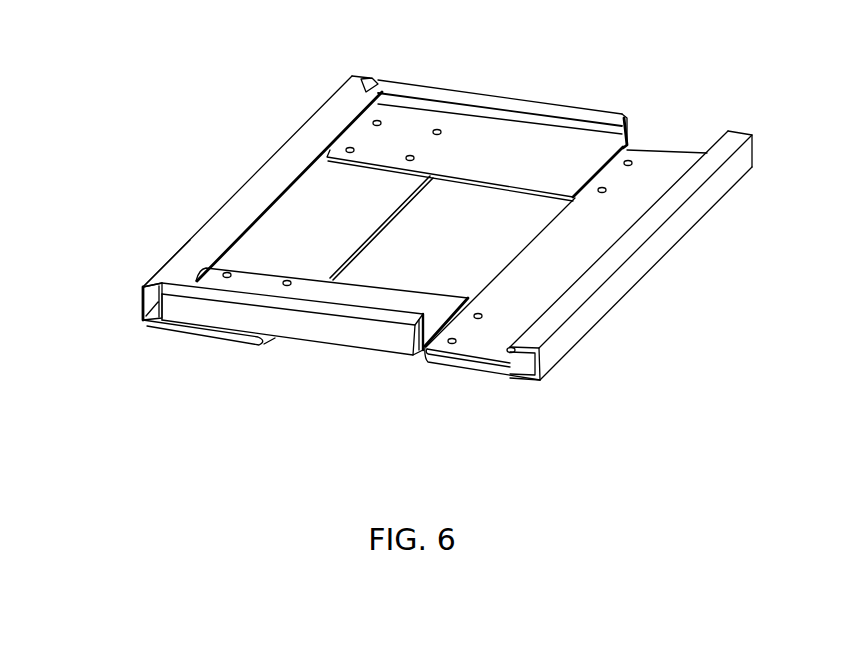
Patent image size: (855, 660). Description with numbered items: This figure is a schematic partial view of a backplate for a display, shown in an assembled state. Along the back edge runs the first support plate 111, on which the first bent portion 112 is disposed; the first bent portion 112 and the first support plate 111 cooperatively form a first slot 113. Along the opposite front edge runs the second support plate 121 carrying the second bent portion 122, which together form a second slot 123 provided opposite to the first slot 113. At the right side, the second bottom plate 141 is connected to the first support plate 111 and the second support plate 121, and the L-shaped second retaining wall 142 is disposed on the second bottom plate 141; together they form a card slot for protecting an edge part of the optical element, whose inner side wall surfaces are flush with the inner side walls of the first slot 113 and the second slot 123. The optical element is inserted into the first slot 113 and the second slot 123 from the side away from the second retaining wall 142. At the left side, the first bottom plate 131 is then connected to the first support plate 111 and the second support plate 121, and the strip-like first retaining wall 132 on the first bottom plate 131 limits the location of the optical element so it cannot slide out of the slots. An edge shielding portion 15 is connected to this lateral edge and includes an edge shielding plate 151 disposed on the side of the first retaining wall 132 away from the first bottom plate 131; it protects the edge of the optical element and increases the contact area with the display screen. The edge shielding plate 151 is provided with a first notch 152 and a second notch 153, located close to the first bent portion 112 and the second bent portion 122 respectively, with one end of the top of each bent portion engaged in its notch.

The edge shielding portion 15 is at (141, 294).
The edge shielding plate 151 is at (277, 177).
The first notch 152 is at (376, 93).
The second notch 153 is at (170, 262).
The first retaining wall 132 is at (141, 321).
The first bottom plate 131 is at (190, 328).
The second bent portion 122 is at (312, 327).
The second support plate 121 is at (388, 302).
The second slot 123 is at (455, 345).
The second retaining wall 142 is at (627, 277).
The second bottom plate 141 is at (500, 358).
The first support plate 111 is at (580, 148).
The first bent portion 112 is at (520, 100).
The first slot 113 is at (627, 120).